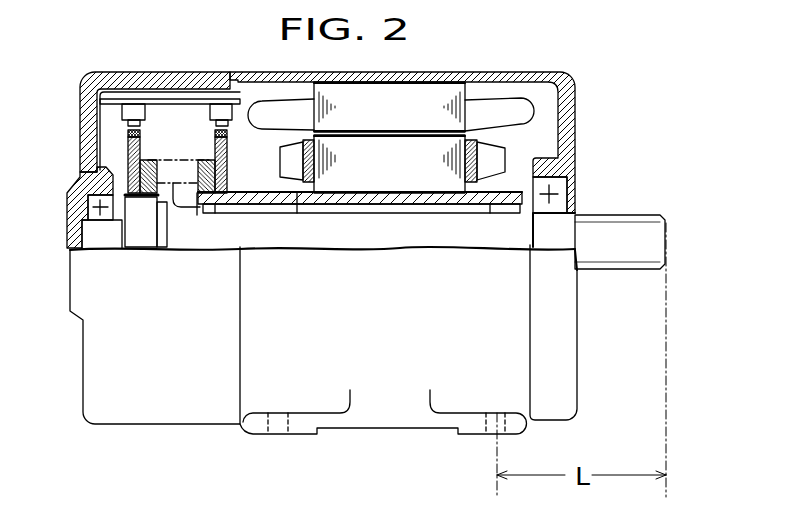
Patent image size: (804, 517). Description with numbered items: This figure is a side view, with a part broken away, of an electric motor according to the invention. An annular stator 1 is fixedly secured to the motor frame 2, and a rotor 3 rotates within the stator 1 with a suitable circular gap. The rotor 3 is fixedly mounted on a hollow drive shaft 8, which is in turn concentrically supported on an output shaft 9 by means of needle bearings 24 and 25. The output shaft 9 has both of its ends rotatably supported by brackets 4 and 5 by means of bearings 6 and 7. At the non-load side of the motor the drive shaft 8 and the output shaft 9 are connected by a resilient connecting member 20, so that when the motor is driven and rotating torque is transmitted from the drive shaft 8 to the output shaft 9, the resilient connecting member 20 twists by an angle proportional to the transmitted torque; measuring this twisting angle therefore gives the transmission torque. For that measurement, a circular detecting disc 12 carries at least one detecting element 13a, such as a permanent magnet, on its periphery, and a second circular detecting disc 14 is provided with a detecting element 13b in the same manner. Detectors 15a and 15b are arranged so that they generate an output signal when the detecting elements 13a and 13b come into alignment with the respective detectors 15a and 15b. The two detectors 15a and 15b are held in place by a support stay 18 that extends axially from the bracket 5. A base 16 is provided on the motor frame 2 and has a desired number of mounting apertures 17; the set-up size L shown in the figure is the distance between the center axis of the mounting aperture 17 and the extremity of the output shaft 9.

The stator 1 is at (347, 100).
The motor frame 2 is at (362, 84).
The rotor 3 is at (385, 153).
The bracket 4 is at (80, 107).
The bracket 5 is at (575, 110).
The bearing 6 is at (106, 207).
The bearing 7 is at (562, 187).
The hollow drive shaft 8 is at (295, 216).
The output shaft 9 is at (424, 238).
The circular detecting disc 12 is at (228, 159).
The detecting element 13a is at (217, 133).
The detecting element 13b is at (128, 133).
The circular detecting disc 14 is at (128, 152).
The detector 15a is at (222, 112).
The detector 15b is at (135, 112).
The base 16 is at (380, 420).
The mounting aperture 17 is at (487, 430).
The support stay 18 is at (177, 99).
The resilient connecting member 20 is at (187, 183).
The needle bearing 24 is at (215, 208).
The needle bearing 25 is at (508, 207).